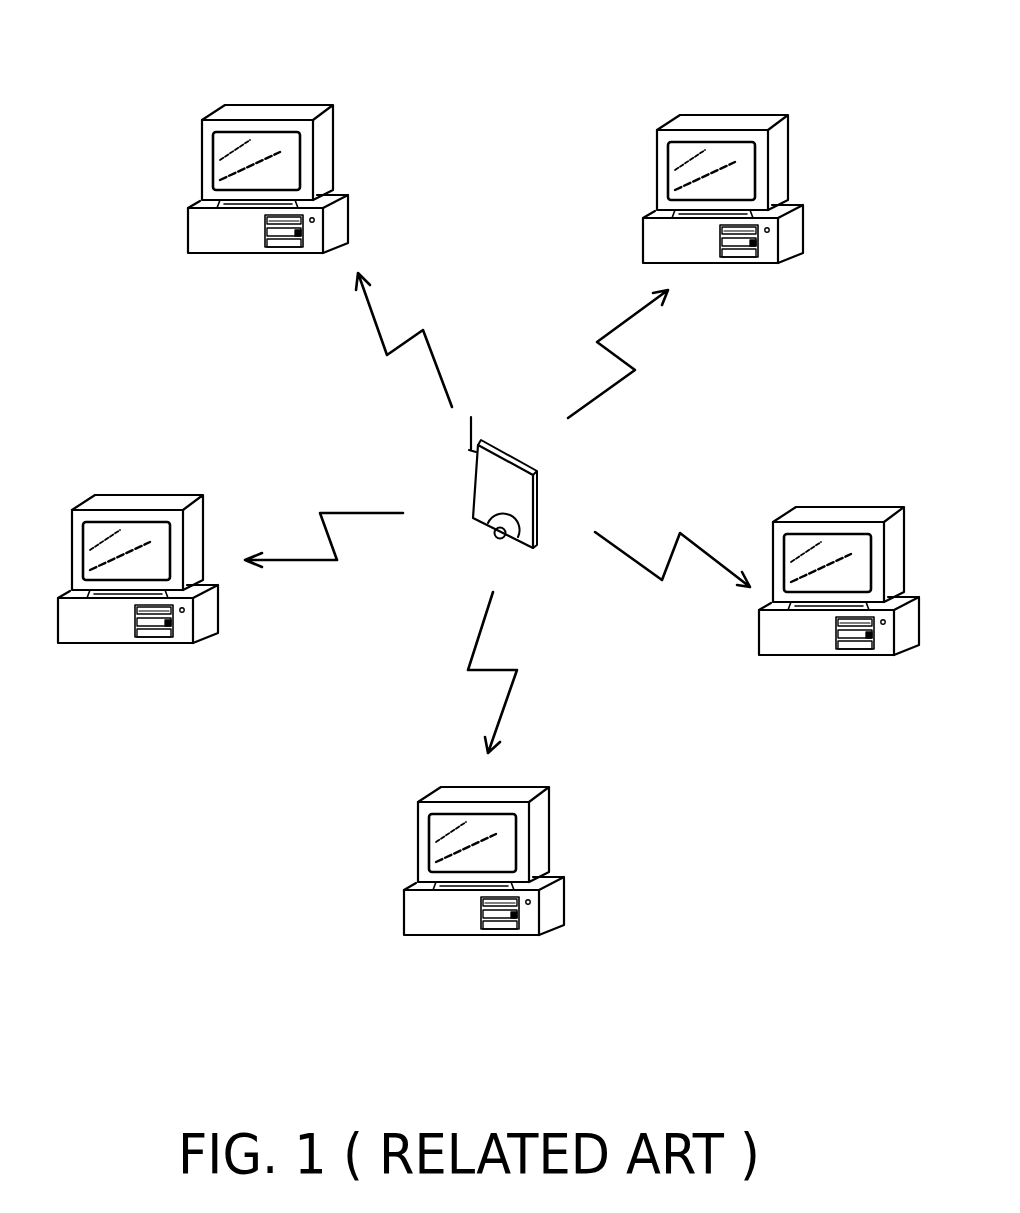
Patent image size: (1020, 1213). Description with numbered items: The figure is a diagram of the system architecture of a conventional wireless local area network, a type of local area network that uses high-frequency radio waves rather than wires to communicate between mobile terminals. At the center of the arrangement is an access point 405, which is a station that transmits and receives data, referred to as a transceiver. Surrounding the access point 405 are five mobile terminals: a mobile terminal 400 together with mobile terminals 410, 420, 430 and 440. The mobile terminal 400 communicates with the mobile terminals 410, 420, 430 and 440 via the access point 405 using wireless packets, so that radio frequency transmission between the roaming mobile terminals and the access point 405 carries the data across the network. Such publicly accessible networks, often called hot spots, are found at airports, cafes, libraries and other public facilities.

The mobile terminal 400 is at (283, 105).
The mobile terminal 410 is at (738, 115).
The mobile terminal 420 is at (855, 507).
The mobile terminal 430 is at (537, 787).
The mobile terminal 440 is at (153, 495).
The access point 405 is at (512, 460).